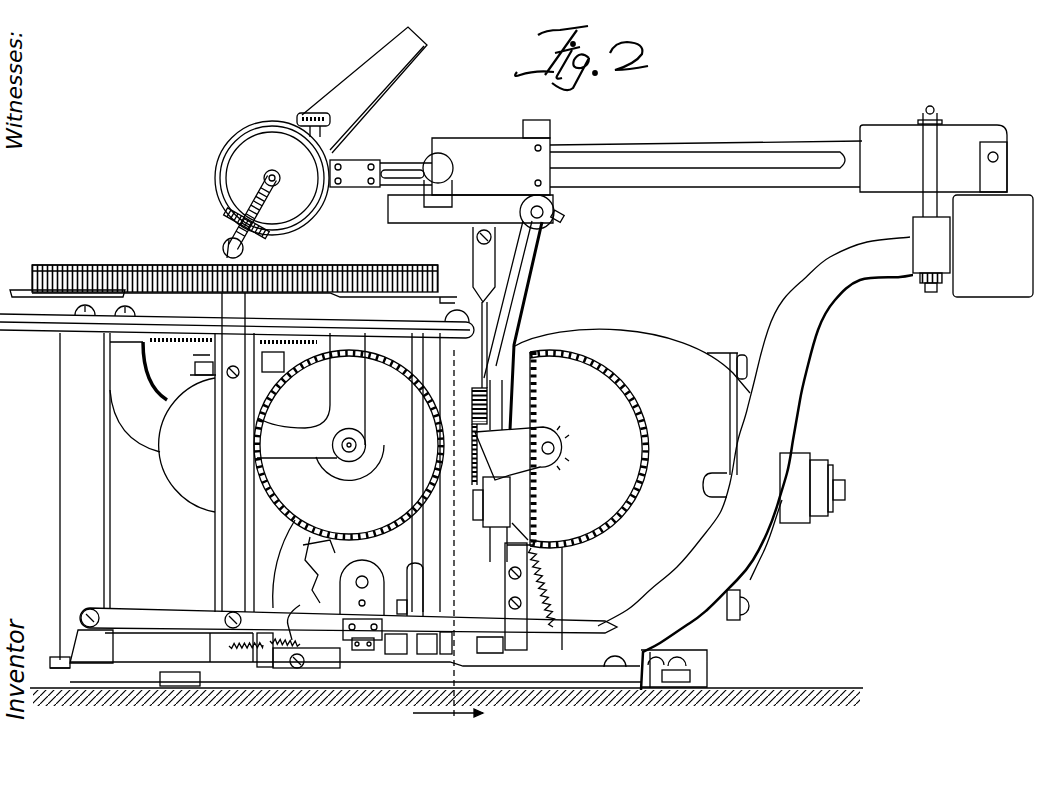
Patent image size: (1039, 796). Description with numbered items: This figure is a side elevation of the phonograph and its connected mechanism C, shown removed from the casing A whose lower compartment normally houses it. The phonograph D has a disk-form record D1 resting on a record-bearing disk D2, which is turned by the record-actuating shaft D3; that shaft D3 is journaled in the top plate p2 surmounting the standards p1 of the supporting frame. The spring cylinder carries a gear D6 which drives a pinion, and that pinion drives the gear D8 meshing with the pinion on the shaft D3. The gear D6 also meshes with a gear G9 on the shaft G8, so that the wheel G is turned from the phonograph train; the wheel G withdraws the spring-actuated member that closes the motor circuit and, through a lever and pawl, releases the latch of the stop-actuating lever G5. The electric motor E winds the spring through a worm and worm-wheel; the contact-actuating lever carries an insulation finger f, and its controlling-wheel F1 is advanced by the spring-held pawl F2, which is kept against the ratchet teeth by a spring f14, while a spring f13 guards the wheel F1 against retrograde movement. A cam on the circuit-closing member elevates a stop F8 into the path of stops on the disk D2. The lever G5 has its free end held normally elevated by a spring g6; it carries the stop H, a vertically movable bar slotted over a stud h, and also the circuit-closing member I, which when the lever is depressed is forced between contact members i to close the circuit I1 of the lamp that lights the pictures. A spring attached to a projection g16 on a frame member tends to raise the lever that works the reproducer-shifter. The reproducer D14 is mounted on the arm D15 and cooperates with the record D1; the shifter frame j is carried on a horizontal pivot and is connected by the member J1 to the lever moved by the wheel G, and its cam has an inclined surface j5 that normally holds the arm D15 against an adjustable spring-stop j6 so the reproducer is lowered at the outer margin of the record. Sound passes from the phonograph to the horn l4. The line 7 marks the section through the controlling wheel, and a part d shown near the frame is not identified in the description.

The reproducer D14 is at (260, 174).
The horn l4 is at (380, 88).
The record-actuating shaft D3 is at (245, 243).
The inclined surface j5 is at (397, 193).
The adjustable spring-stop j6 is at (486, 172).
The frame j is at (547, 171).
The insulation finger f is at (445, 212).
The arm D15 is at (732, 178).
The phonograph and connected mechanism C is at (815, 442).
The record-bearing disk D2 is at (58, 265).
The disk-form record D1 is at (97, 264).
The phonograph D is at (235, 248).
The top plate p2 is at (237, 331).
The standards p1 is at (450, 370).
The gear D8 is at (180, 482).
The stop H is at (230, 423).
The stud h is at (233, 377).
The gear D6 is at (425, 510).
The post d is at (445, 299).
The connecting member J1 is at (490, 283).
The projection g16 is at (484, 375).
The gear G9 is at (589, 449).
The wheel G is at (530, 497).
The shaft G8 is at (550, 432).
The electric motor E is at (631, 413).
The spring g6 is at (540, 597).
The stop-actuating lever G5 is at (157, 600).
The controlling-wheel F1 is at (320, 575).
The actuating pawl F2 is at (330, 553).
The spring f14 is at (276, 564).
The spring f13 is at (300, 612).
The stop F8 is at (412, 640).
The circuit-closing member I is at (368, 638).
The contact members i is at (323, 662).
The circuit I1 is at (243, 652).
The section line 7 is at (448, 552).
The casing A is at (446, 723).